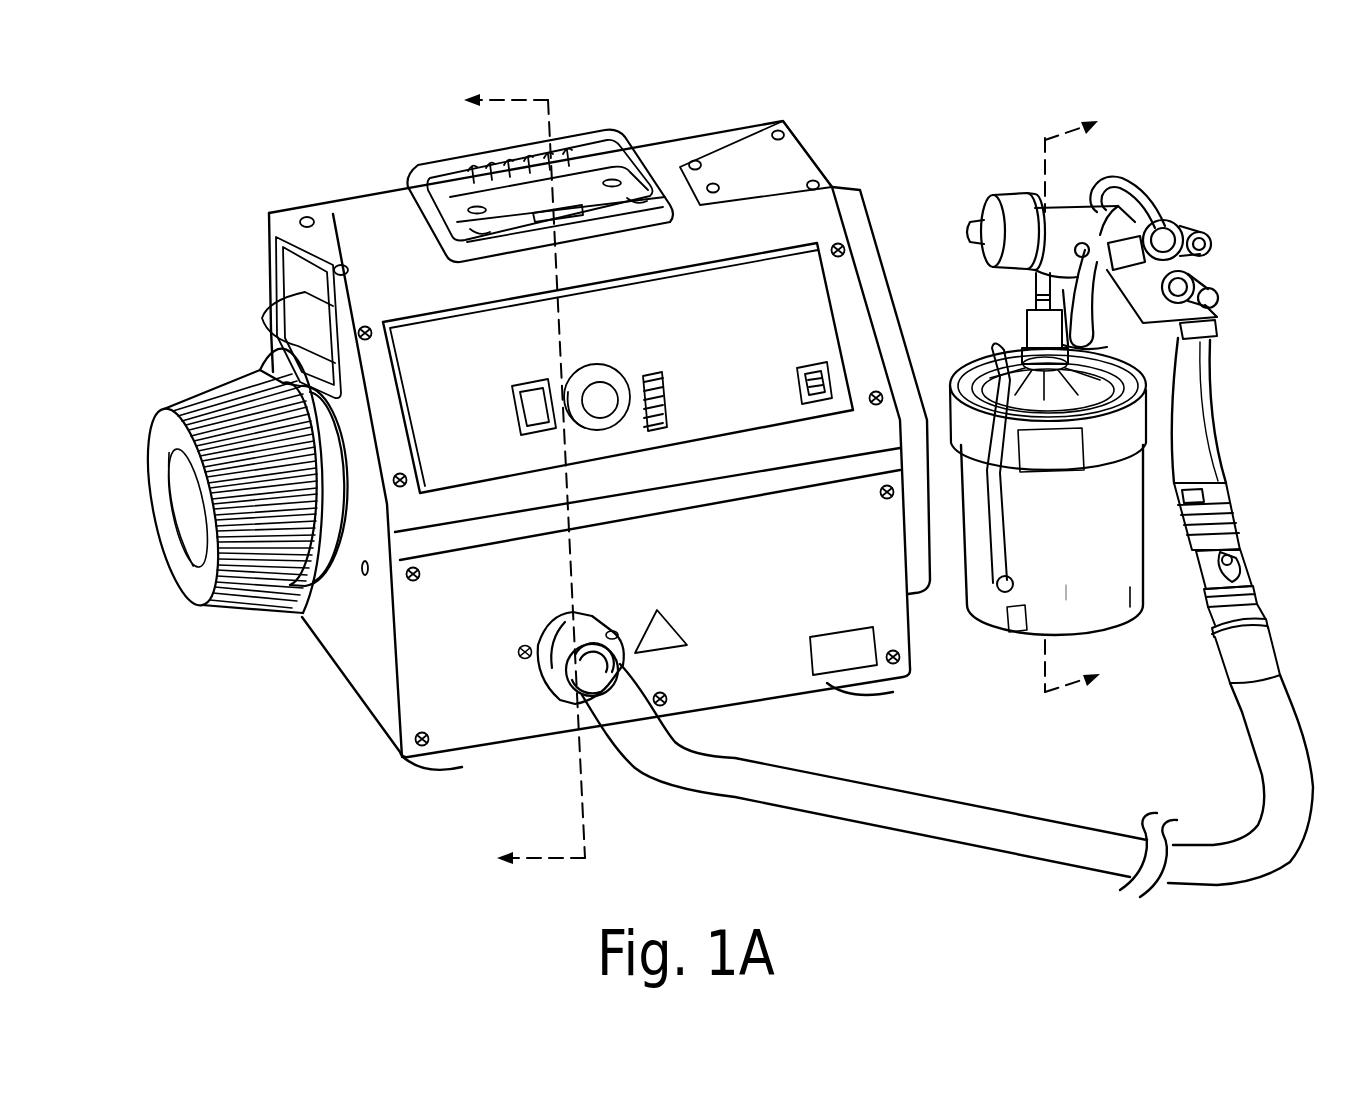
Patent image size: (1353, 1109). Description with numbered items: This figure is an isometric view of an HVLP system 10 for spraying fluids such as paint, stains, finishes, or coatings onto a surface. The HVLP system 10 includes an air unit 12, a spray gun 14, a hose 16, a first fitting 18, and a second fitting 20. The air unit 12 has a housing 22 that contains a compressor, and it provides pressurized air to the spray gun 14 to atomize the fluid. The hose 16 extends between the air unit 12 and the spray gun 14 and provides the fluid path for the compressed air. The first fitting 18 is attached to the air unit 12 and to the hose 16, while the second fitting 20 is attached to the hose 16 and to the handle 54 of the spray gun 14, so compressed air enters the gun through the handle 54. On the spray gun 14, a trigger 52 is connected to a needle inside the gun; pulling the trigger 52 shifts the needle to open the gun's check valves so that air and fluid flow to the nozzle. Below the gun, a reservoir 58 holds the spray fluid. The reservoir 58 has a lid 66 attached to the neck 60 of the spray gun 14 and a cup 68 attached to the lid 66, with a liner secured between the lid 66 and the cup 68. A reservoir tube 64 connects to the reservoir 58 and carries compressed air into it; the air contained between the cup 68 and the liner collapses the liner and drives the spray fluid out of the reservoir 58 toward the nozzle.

The HVLP system 10 is at (300, 142).
The air unit 12 is at (838, 213).
The spray gun 14 is at (1178, 212).
The hose 16 is at (750, 800).
The first fitting 18 is at (540, 680).
The second fitting 20 is at (1258, 652).
The housing 22 is at (365, 650).
The trigger 52 is at (1187, 333).
The handle 54 is at (1188, 418).
The reservoir 58 is at (1125, 575).
The neck 60 is at (1034, 297).
The reservoir tube 64 is at (990, 530).
The lid 66 is at (953, 378).
The cup 68 is at (1068, 597).